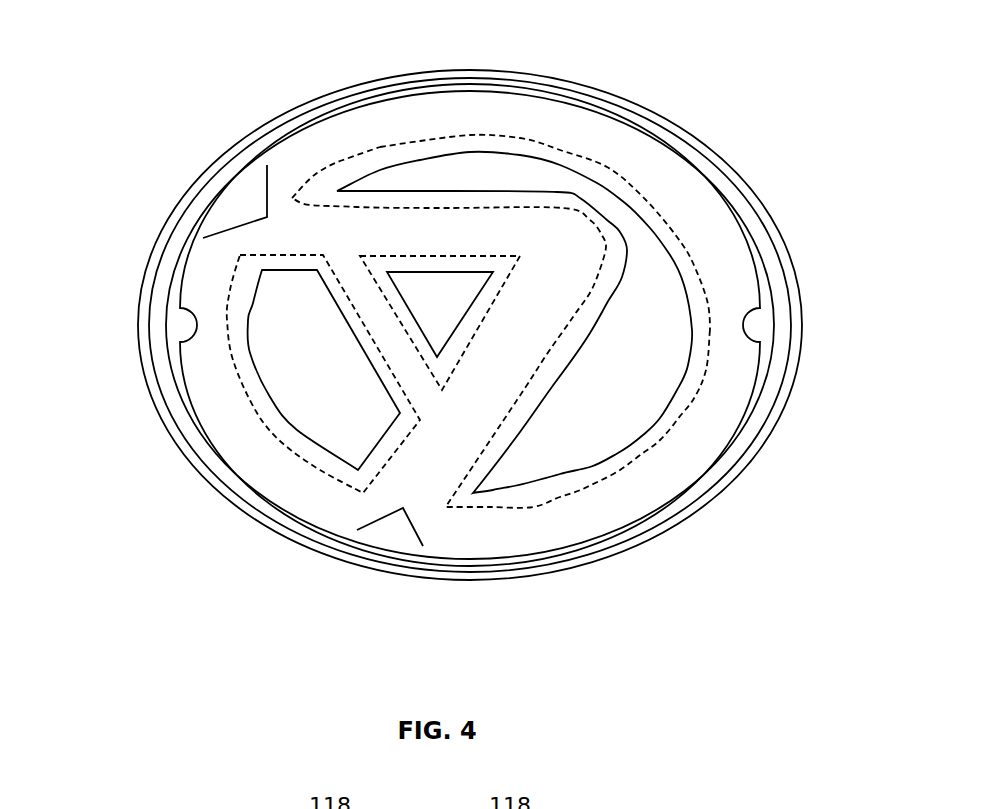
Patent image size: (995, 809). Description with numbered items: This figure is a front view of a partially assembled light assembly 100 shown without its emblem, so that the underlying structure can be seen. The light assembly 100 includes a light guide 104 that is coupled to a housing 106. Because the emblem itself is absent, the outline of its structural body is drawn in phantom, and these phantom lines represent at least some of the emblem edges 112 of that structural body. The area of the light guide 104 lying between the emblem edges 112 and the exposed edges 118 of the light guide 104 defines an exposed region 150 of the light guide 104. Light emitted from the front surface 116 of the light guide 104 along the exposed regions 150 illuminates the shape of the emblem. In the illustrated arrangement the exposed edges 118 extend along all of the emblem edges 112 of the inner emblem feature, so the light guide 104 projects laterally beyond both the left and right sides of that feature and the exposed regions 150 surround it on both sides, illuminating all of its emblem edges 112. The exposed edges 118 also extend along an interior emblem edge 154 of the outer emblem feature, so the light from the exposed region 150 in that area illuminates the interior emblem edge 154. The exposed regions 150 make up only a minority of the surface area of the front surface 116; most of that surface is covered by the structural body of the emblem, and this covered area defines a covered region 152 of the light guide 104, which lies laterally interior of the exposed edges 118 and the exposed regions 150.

The light assembly 100 is at (698, 76).
The light guide 104 is at (465, 532).
The housing 106 is at (341, 538).
The emblem edges 112 is at (357, 207).
The front surface 116 is at (520, 527).
The exposed edges 118 is at (372, 190).
The exposed region 150 is at (360, 316).
The covered region 152 is at (467, 232).
The interior emblem edge 154 is at (607, 167).